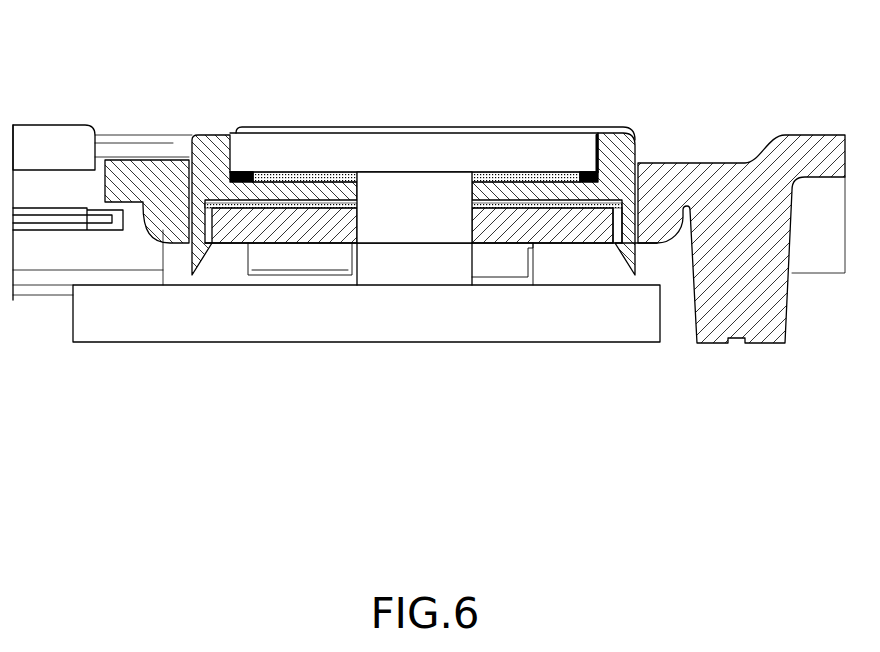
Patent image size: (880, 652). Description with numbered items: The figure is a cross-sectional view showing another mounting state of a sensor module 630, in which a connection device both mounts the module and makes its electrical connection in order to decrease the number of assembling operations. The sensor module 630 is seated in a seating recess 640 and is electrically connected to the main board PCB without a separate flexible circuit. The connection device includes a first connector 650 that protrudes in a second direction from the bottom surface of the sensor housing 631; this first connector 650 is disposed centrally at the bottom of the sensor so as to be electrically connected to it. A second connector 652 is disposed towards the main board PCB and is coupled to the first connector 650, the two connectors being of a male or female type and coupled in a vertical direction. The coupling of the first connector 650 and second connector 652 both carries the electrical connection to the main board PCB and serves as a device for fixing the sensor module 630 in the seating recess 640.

The sensor module 630 is at (424, 152).
The sensor housing 631 is at (213, 150).
The seating recess 640 is at (190, 195).
The first connector 650 is at (388, 225).
The second connector 652 is at (438, 265).
The main board PCB is at (290, 328).